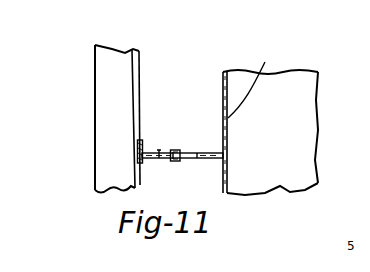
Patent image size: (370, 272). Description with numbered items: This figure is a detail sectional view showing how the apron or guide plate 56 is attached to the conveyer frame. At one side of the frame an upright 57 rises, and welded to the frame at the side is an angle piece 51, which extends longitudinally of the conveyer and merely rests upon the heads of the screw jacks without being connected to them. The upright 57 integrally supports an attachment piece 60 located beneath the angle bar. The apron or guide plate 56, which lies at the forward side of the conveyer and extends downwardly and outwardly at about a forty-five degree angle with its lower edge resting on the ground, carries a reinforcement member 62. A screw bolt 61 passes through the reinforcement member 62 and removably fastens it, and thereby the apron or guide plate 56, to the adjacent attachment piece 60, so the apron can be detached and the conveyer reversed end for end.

The angle piece 51 is at (126, 74).
The apron or guide plate 56 is at (277, 83).
The upright 57 is at (142, 148).
The attachment piece 60 is at (175, 160).
The screw bolt 61 is at (183, 161).
The reinforcement member 62 is at (198, 150).